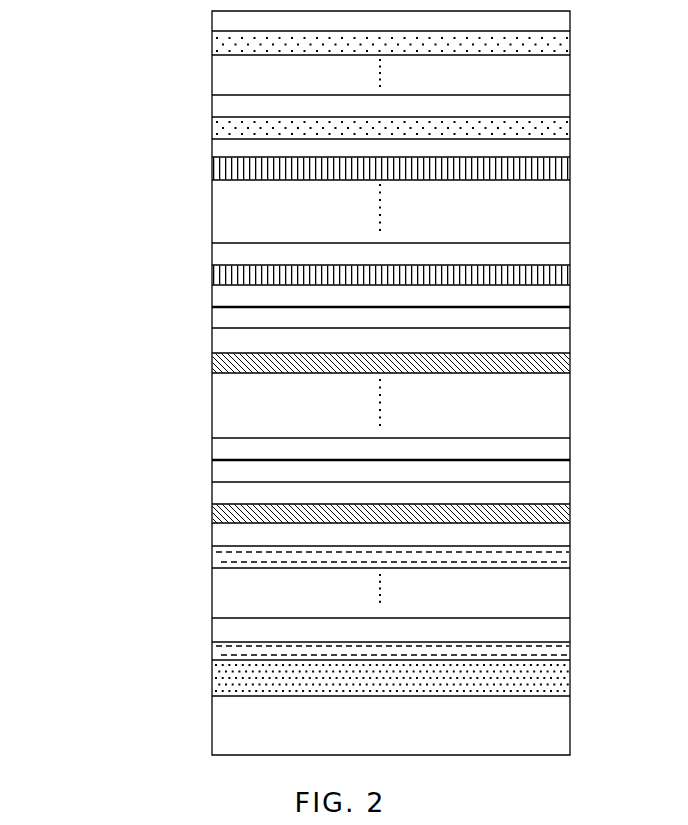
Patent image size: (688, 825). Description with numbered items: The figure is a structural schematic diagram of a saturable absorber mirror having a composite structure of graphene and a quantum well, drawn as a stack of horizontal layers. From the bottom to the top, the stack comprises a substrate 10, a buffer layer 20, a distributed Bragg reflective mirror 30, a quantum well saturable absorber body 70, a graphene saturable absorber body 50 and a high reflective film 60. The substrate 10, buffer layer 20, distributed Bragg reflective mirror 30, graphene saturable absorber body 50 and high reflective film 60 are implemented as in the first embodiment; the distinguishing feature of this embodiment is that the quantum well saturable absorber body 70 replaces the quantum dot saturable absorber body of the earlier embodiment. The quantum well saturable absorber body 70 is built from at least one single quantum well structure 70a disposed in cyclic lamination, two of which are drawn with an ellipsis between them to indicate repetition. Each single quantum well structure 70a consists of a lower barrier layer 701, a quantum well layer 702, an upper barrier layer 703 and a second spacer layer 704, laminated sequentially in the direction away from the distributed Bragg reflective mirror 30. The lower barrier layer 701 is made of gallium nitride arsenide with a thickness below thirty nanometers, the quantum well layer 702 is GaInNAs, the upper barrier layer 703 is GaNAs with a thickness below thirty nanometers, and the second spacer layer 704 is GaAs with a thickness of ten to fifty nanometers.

The substrate 10 is at (228, 726).
The buffer layer 20 is at (228, 680).
The distributed Bragg reflective mirror 30 is at (210, 523).
The graphene saturable absorber body 50 is at (208, 141).
The high reflective film 60 is at (208, 11).
The quantum well saturable absorber body 70 is at (125, 285).
The single quantum well structure 70a is at (575, 287).
The lower barrier layer 701 is at (228, 513).
The quantum well layer 702 is at (228, 490).
The upper barrier layer 703 is at (228, 468).
The second spacer layer 704 is at (228, 448).